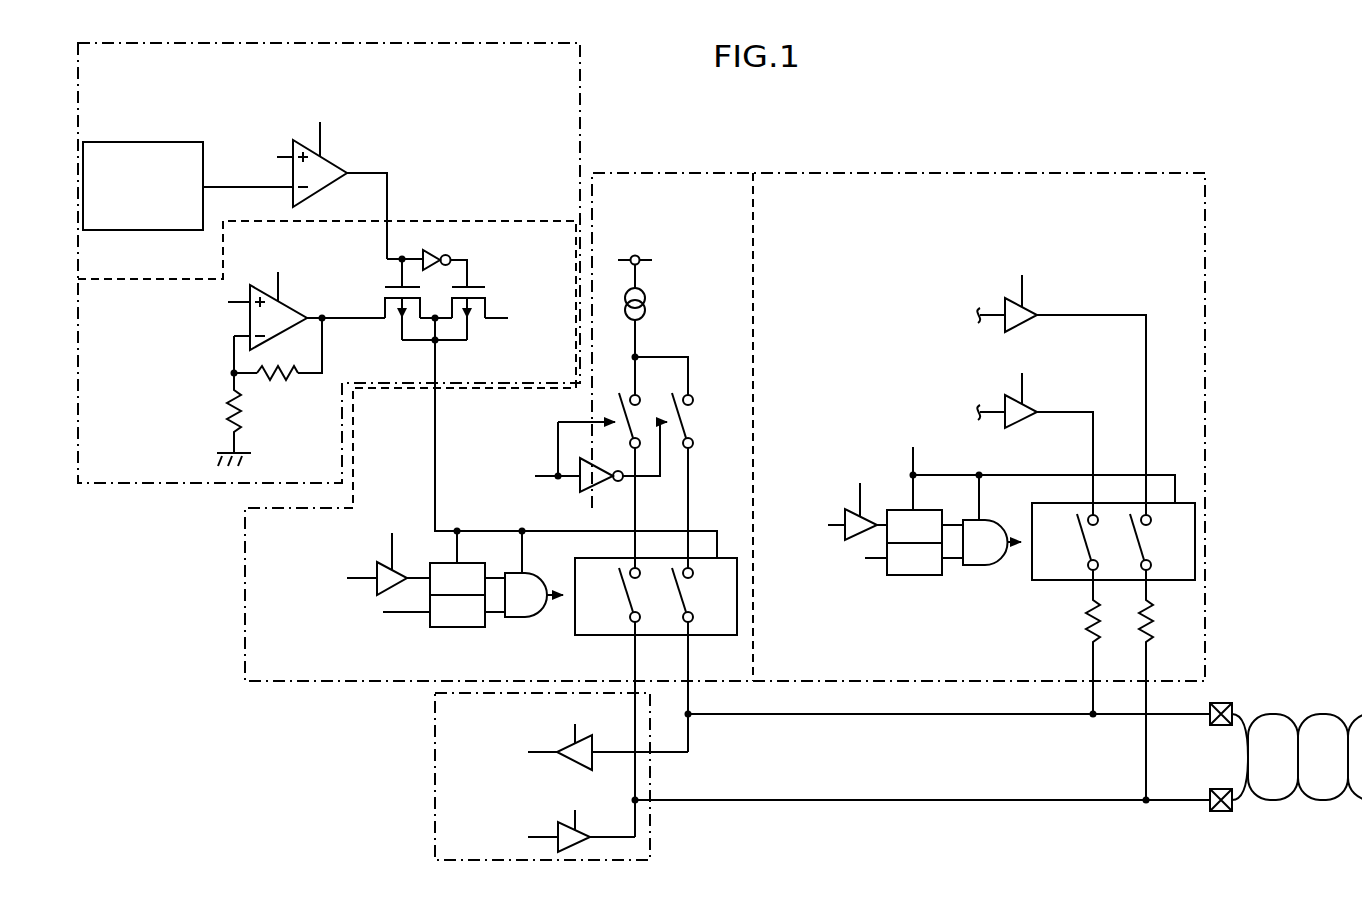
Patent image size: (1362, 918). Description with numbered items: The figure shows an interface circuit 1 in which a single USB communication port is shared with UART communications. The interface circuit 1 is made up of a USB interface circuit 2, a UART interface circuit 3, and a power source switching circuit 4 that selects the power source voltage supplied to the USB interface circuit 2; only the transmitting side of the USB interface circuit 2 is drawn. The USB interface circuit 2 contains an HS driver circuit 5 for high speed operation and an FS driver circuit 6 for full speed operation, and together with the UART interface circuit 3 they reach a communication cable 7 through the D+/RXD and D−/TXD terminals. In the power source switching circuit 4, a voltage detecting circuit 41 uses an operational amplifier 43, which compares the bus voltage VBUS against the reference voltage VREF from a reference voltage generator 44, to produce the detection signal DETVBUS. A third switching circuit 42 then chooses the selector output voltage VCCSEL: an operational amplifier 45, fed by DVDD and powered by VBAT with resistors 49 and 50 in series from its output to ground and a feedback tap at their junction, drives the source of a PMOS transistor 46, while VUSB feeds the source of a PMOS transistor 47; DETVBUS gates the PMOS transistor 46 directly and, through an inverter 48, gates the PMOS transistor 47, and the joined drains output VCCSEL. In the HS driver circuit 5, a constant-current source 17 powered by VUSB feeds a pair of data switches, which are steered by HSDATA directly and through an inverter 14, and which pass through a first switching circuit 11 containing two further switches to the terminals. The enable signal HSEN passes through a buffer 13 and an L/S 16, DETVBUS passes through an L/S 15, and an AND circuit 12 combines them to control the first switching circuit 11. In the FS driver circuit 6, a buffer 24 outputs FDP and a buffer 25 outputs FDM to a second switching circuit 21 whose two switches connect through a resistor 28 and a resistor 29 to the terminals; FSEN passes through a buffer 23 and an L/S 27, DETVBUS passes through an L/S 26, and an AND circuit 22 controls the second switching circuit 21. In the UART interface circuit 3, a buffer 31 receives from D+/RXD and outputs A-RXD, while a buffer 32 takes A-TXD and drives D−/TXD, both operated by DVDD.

The interface circuit 1 is at (1047, 83).
The USB interface circuit 2 is at (952, 172).
The UART interface circuit 3 is at (431, 815).
The power source switching circuit 4 is at (513, 42).
The HS driver circuit 5 is at (713, 193).
The FS driver circuit 6 is at (1087, 191).
The communication cable 7 is at (1321, 710).
The first switching circuit 11 is at (571, 628).
The AND circuit 12 is at (522, 618).
The buffer 13 is at (377, 568).
The inverter 14 is at (596, 489).
The L/S (level shift circuit) 15 is at (458, 628).
The L/S (level shift circuit) 16 is at (481, 564).
The constant-current source 17 is at (643, 311).
The second switching circuit 21 is at (1034, 584).
The AND circuit 22 is at (980, 566).
The buffer 23 is at (842, 518).
The buffer 24 is at (1018, 428).
The buffer 25 is at (1000, 306).
The L/S (level shift circuit) 26 is at (913, 576).
The L/S (level shift circuit) 27 is at (926, 510).
The resistor 28 is at (1076, 644).
The resistor 29 is at (1163, 687).
The buffer 31 is at (562, 763).
The buffer 32 is at (560, 825).
The voltage detecting circuit 41 is at (560, 95).
The third switching circuit 42 is at (137, 466).
The operational amplifier 43 is at (320, 193).
The reference voltage generator 44 is at (130, 142).
The operational amplifier 45 is at (293, 302).
The PMOS transistor 46 is at (388, 329).
The PMOS transistor 47 is at (472, 318).
The inverter 48 is at (447, 252).
The resistor 49 is at (277, 364).
The resistor 50 is at (223, 419).